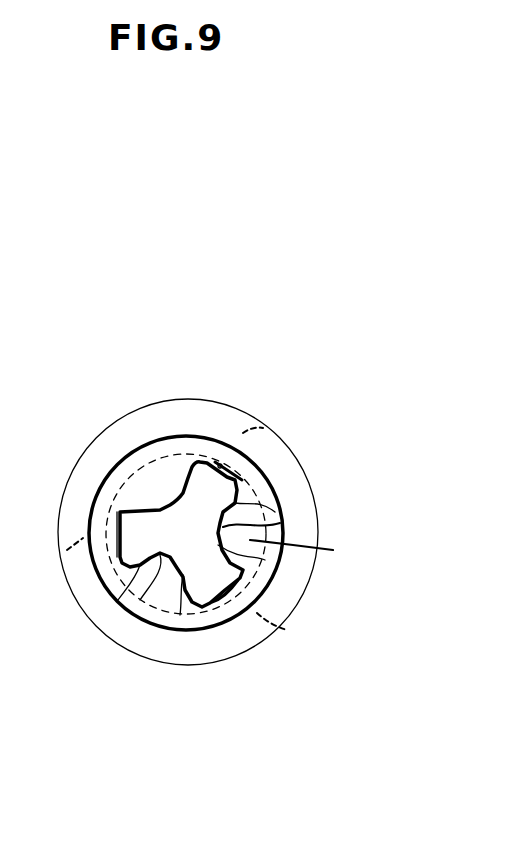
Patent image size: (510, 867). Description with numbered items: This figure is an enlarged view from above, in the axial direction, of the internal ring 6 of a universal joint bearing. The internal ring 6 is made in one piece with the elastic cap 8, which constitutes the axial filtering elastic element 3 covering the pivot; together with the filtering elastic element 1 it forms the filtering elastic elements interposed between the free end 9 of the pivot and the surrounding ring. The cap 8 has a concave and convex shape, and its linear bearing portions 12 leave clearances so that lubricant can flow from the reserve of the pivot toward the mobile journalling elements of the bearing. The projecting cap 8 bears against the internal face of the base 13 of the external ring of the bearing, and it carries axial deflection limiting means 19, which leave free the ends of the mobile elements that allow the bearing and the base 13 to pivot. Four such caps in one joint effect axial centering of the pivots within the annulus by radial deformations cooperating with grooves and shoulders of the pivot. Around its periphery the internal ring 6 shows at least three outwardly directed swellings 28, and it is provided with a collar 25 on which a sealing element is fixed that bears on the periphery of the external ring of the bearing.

The filtering elastic element 1 is at (258, 458).
The axial filtering elastic element 3 is at (168, 470).
The internal ring 6 is at (270, 498).
The elastic cap 8 is at (125, 478).
The free end 9 is at (267, 588).
The linear bearing portions 12 is at (153, 500).
The base 13 is at (108, 570).
The axial deflection limiting means 19 is at (225, 462).
The collar 25 is at (288, 470).
The outwardly directed swellings 28 is at (268, 425).